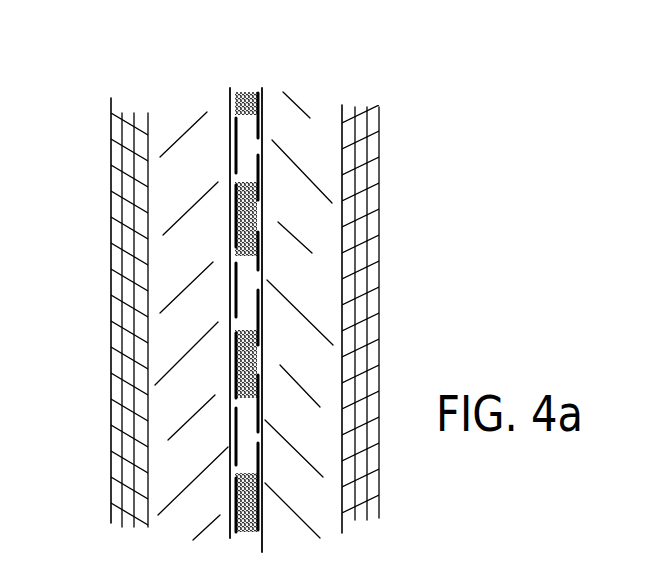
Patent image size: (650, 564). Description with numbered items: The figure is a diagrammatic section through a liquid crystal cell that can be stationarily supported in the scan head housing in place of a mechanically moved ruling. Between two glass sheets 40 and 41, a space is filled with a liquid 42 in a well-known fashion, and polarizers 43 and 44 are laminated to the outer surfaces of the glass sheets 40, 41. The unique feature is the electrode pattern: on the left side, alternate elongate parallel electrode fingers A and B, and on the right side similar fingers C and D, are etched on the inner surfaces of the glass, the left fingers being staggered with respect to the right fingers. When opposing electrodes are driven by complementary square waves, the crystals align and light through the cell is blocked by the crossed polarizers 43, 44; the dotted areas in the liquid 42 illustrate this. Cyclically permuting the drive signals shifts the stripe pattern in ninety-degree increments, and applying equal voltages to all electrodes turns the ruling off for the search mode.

The glass sheet 40 is at (187, 120).
The glass sheet 41 is at (310, 125).
The liquid 42 is at (247, 88).
The polarizer 43 is at (132, 253).
The polarizer 44 is at (360, 275).